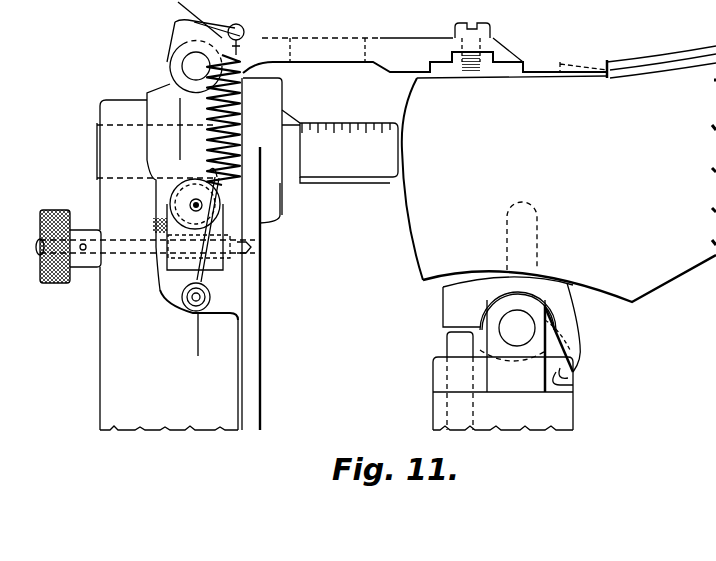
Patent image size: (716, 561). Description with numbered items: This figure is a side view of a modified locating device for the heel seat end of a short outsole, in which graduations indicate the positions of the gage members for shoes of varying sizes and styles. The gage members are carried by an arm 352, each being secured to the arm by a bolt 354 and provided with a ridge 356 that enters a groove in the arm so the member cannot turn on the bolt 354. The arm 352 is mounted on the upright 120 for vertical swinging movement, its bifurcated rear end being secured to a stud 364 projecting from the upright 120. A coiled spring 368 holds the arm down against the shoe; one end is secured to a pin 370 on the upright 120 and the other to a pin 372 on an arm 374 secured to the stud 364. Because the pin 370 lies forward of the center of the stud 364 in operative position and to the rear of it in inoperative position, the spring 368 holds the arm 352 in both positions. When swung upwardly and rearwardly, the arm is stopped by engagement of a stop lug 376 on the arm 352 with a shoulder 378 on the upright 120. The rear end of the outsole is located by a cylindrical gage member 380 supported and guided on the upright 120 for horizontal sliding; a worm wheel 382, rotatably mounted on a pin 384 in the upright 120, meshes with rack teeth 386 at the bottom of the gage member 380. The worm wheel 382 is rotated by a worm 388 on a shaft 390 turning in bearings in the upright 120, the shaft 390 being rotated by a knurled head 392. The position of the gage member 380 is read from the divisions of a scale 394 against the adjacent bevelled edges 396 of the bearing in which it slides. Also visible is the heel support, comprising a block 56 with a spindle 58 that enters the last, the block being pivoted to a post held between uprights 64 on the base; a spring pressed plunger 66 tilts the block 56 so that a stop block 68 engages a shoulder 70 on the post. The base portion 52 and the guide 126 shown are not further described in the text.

The base block 52 is at (503, 407).
The block 56 is at (450, 307).
The spindle 58 is at (528, 232).
The uprights 64 is at (560, 417).
The spring pressed plunger 66 is at (455, 345).
The stop block 68 is at (582, 350).
The shoulder 70 is at (573, 392).
The upright 120 is at (100, 410).
The guide ruler 126 is at (670, 62).
The arm 352 is at (332, 50).
The bolt 354 is at (488, 25).
The ridge 356 is at (483, 58).
The stud 364 is at (197, 65).
The coiled spring 368 is at (228, 110).
The pin 370 is at (196, 305).
The pin 372 is at (236, 24).
The arm 374 is at (177, 19).
The stop lug 376 is at (172, 25).
The shoulder 378 is at (143, 94).
The cylindrical gage member 380 is at (369, 184).
The worm wheel 382 is at (170, 200).
The pin 384 is at (200, 204).
The rack teeth 386 is at (120, 178).
The worm 388 is at (192, 258).
The shaft 390 is at (128, 242).
The knurled head 392 is at (46, 286).
The scale 394 is at (346, 118).
The bevelled edges 396 is at (310, 150).